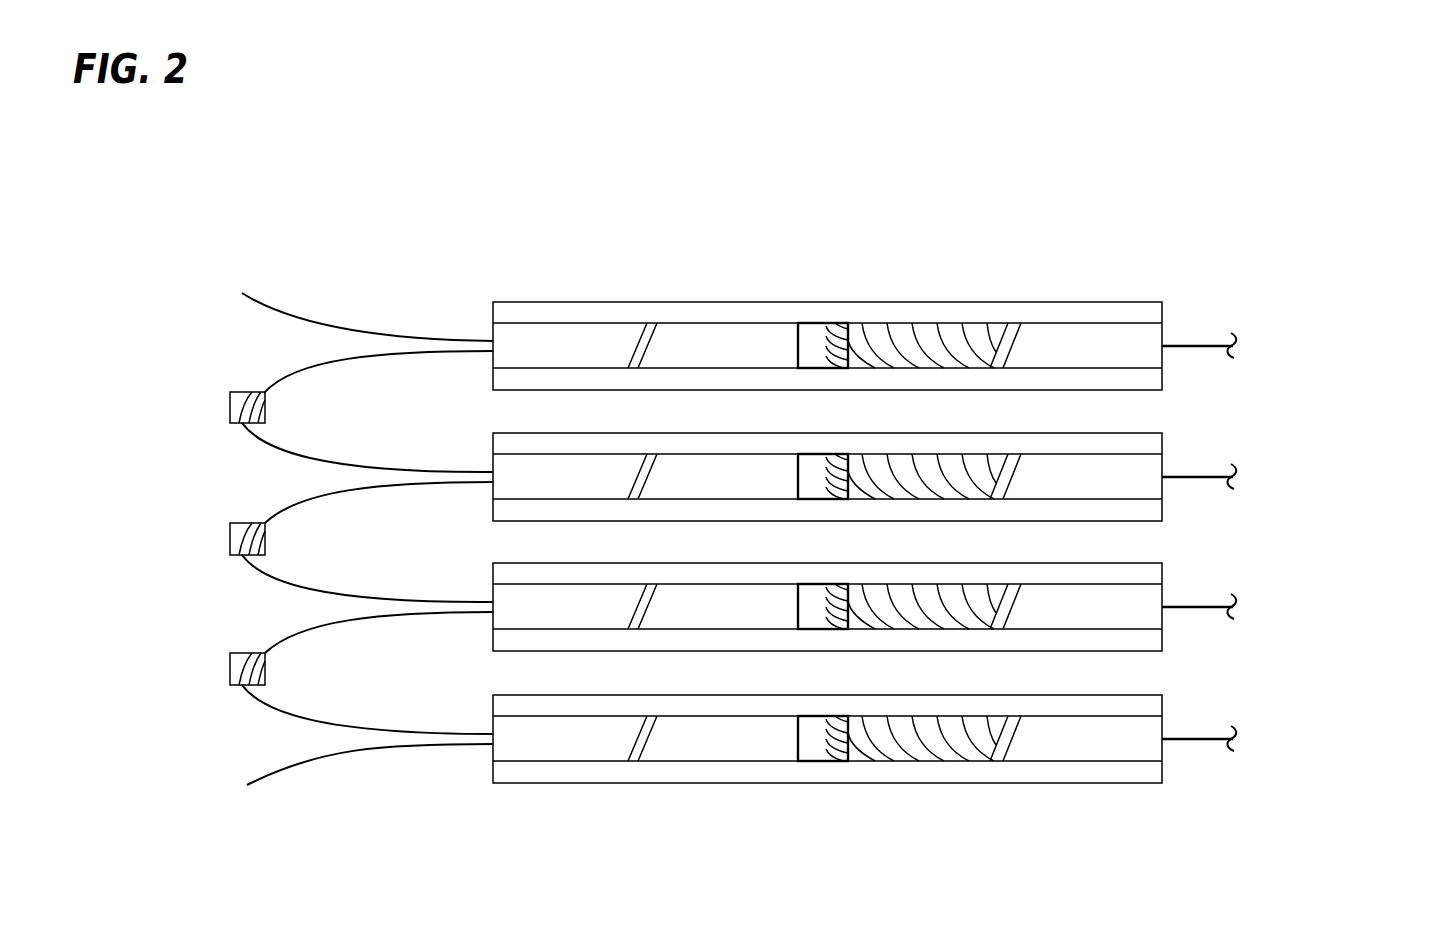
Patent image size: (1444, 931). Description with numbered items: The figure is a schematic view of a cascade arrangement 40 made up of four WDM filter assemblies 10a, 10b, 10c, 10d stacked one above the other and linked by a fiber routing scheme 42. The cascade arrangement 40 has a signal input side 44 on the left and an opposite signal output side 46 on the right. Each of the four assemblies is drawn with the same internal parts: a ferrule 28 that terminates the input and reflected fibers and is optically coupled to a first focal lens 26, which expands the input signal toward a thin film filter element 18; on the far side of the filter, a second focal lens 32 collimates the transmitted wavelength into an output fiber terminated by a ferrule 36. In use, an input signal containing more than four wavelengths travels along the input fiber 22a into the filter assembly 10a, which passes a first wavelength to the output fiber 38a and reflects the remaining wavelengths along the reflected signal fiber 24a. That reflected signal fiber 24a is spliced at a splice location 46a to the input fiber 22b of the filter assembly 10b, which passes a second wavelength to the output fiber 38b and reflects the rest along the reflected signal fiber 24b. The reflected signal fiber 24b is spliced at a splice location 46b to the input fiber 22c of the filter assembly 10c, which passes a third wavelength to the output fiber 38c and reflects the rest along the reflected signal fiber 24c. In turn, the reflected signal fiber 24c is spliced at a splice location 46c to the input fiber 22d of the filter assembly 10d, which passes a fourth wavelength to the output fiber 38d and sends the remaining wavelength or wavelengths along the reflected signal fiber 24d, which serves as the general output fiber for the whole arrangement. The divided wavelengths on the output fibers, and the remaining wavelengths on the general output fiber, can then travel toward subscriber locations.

The cascade arrangement 40 is at (1173, 223).
The WDM filter assembly 10a is at (507, 292).
The WDM filter assembly 10b is at (493, 425).
The WDM filter assembly 10c is at (493, 553).
The WDM filter assembly 10d is at (492, 687).
The thin film filter element 18 is at (820, 335).
The first focal lens 26 is at (700, 332).
The ferrule 28 is at (588, 332).
The second focal lens 32 is at (885, 334).
The ferrule 36 is at (1052, 332).
The input fiber 22a is at (312, 327).
The input fiber 22b is at (325, 465).
The input fiber 22c is at (338, 595).
The input fiber 22d is at (348, 730).
The reflected signal fiber 24a is at (327, 358).
The reflected signal fiber 24b is at (347, 488).
The reflected signal fiber 24c is at (333, 618).
The reflected signal fiber 24d is at (352, 747).
The output fiber 38a is at (1197, 345).
The output fiber 38b is at (1197, 477).
The output fiber 38c is at (1190, 607).
The output fiber 38d is at (1195, 740).
The fiber routing scheme 42 is at (168, 322).
The signal input side 44 is at (168, 592).
The signal output side 46 is at (1290, 534).
The splice location 46a is at (223, 385).
The splice location 46b is at (223, 522).
The splice location 46c is at (223, 652).